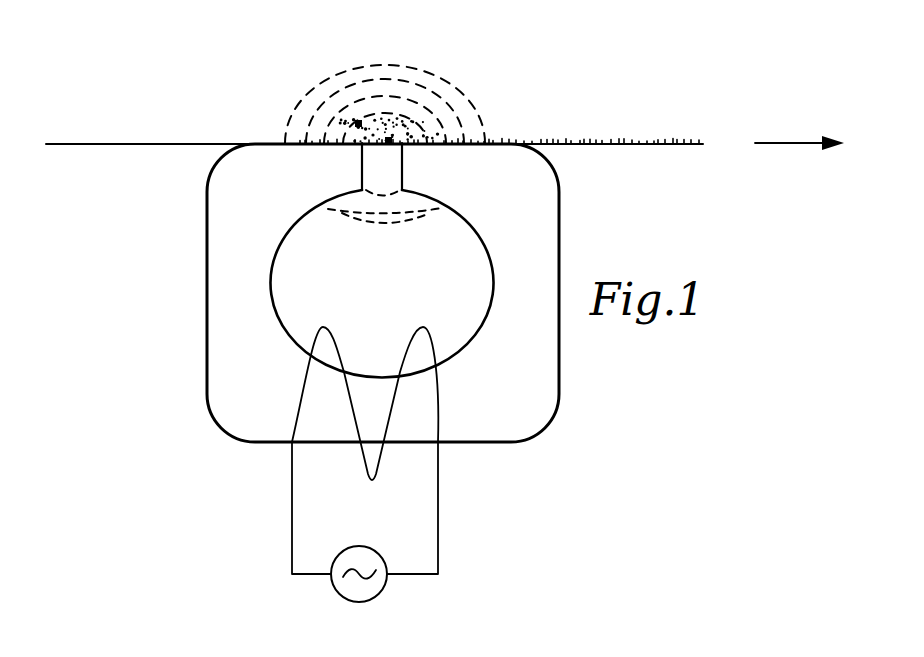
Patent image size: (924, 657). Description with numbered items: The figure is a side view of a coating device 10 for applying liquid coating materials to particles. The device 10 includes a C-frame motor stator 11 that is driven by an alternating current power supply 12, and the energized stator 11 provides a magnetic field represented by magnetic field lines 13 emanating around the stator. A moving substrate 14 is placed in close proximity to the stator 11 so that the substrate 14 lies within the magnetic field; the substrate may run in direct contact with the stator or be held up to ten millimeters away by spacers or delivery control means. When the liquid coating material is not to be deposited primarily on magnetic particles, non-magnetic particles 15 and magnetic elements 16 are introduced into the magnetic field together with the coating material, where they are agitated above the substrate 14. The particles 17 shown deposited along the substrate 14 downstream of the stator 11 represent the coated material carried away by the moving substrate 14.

The device 10 is at (359, 394).
The C-frame motor stator 11 is at (538, 397).
The alternating current power supply 12 is at (377, 600).
The magnetic field lines 13 is at (465, 102).
The moving substrate 14 is at (145, 142).
The non-magnetic particles 15 is at (400, 123).
The magnetic elements 16 is at (358, 122).
The deposited particles 17 is at (588, 142).